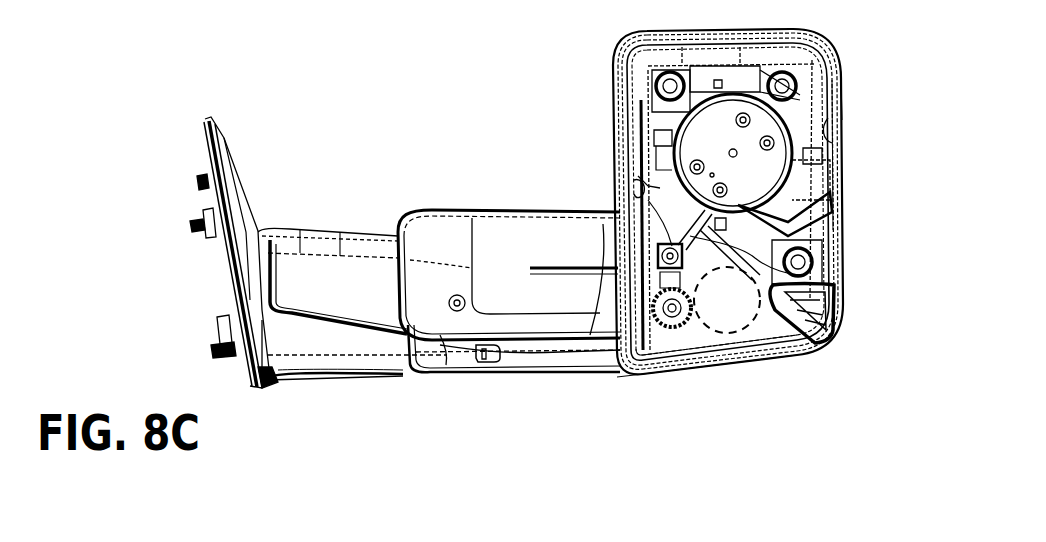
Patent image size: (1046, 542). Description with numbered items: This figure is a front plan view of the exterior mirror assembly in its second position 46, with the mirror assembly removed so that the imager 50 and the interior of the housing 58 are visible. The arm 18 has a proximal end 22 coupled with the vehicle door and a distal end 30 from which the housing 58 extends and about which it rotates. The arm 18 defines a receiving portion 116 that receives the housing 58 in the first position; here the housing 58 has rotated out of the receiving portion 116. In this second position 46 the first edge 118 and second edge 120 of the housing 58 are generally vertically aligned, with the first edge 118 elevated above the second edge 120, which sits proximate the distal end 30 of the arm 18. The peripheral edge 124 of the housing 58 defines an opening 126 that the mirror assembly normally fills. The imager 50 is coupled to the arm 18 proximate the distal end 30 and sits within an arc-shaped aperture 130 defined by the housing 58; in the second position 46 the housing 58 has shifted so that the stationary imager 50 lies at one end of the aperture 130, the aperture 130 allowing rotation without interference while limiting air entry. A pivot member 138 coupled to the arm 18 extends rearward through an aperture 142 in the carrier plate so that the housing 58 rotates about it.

The arm 18 is at (338, 233).
The proximal end 22 is at (297, 263).
The distal end 30 is at (600, 350).
The second position 46 is at (855, 303).
The imager 50 is at (640, 188).
The housing 58 is at (847, 223).
The receiving portion 116 is at (455, 345).
The first edge 118 is at (748, 30).
The second edge 120 is at (740, 370).
The peripheral edge 124 is at (840, 73).
The opening 126 is at (830, 127).
The aperture 130 is at (777, 362).
The pivot member 138 is at (670, 330).
The aperture 142 is at (663, 340).